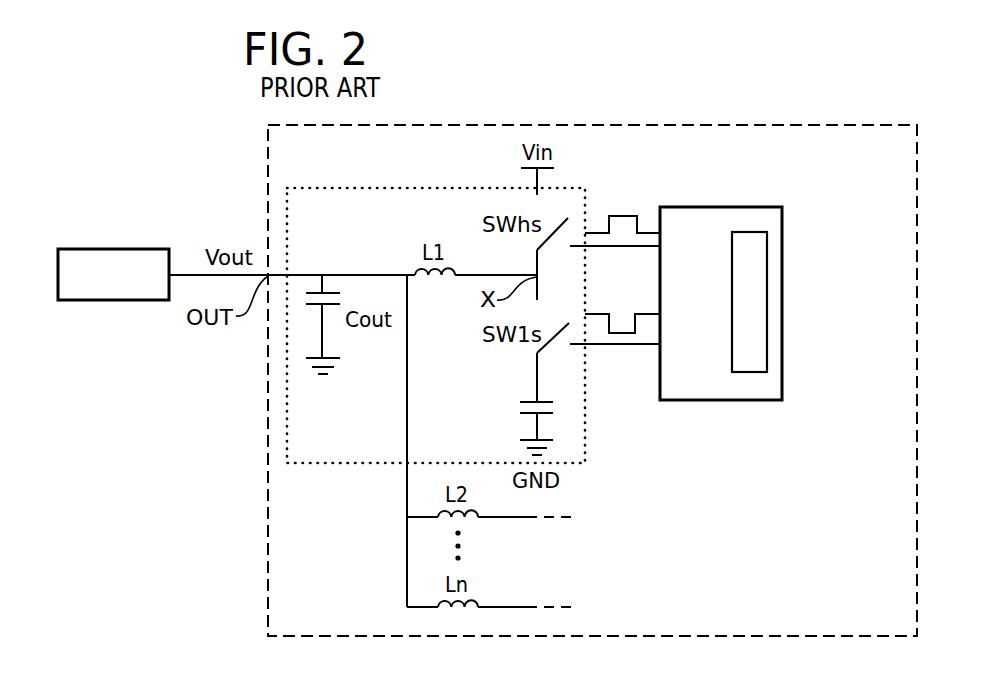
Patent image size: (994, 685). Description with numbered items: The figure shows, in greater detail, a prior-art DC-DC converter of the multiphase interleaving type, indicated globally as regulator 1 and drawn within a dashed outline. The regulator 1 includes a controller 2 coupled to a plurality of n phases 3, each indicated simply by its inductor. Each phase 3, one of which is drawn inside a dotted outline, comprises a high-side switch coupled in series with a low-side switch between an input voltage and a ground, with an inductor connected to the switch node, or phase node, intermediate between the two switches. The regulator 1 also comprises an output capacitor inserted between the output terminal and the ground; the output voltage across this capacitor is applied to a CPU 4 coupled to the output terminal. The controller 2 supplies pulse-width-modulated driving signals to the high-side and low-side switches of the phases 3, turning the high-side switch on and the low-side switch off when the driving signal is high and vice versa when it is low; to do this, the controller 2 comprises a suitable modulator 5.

The regulator 1 is at (524, 125).
The controller 2 is at (715, 207).
The phase 3 is at (355, 188).
The CPU 4 is at (115, 249).
The modulator 5 is at (750, 372).